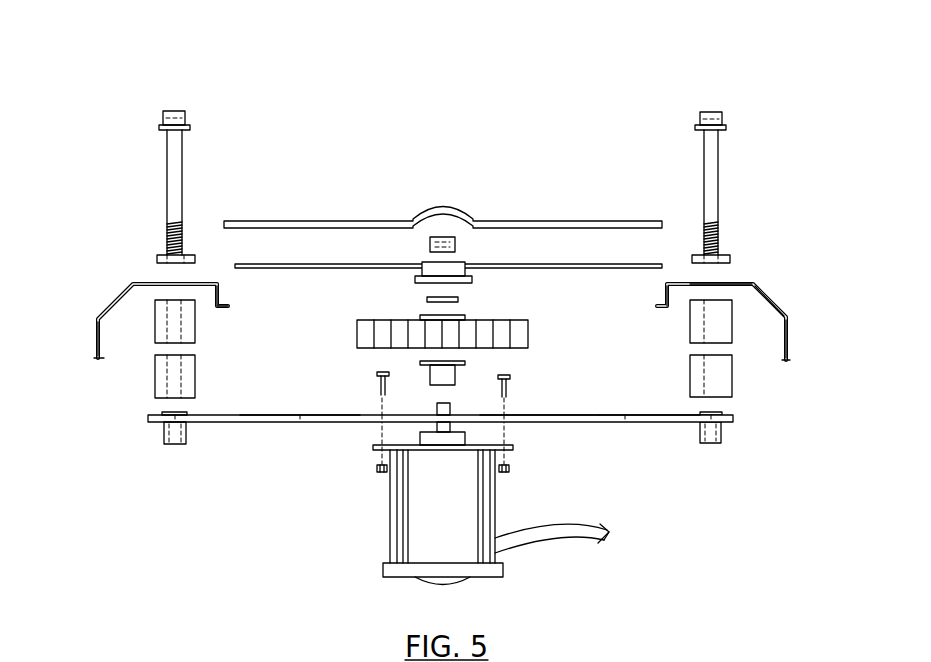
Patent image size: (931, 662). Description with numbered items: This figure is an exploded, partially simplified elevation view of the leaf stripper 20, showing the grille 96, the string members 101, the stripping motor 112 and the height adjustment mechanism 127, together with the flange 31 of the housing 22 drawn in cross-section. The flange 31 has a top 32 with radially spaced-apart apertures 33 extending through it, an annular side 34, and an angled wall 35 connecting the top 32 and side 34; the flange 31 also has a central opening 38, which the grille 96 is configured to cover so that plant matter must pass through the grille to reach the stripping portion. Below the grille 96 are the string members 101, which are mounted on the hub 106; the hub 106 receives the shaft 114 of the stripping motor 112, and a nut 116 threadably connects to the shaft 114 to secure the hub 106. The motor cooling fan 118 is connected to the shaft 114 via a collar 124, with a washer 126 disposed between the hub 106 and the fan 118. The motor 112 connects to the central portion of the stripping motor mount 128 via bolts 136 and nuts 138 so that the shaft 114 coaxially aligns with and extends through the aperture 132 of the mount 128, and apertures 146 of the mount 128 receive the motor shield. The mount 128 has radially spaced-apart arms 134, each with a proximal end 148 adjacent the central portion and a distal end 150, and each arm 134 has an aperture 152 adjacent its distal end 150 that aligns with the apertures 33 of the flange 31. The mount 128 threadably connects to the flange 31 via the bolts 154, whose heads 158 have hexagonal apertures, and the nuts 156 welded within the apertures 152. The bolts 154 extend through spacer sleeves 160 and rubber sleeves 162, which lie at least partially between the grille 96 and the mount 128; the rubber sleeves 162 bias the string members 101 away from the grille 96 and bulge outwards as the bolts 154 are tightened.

The leaf stripper 20 is at (95, 68).
The housing 22 is at (83, 333).
The height adjustment mechanism 127 is at (130, 358).
The central opening 38 is at (240, 298).
The grille 96 is at (345, 220).
The nut 116 is at (430, 244).
The string members 101 is at (299, 268).
The hub 106 is at (466, 272).
The washer 126 is at (428, 298).
The motor cooling fan 118 is at (532, 333).
The collar 124 is at (448, 374).
The aperture 132 is at (418, 414).
The bolts 136 is at (512, 377).
The nuts 138 is at (512, 466).
The shaft 114 is at (450, 405).
The stripping motor 112 is at (461, 524).
The stripping motor mount 128 is at (638, 425).
The apertures 146 is at (300, 415).
The proximal end 148 is at (522, 415).
The arms 134 is at (622, 415).
The nuts 156 is at (712, 106).
The heads 158 is at (724, 116).
The bolts 154 is at (719, 148).
The distal end 150 is at (734, 440).
The aperture 152 is at (728, 424).
The top 32 is at (737, 280).
The flange 31 is at (755, 281).
The apertures 33 is at (698, 282).
The angled wall 35 is at (758, 290).
The annular side 34 is at (788, 338).
The rubber sleeves 162 is at (733, 320).
The spacer sleeves 160 is at (733, 383).